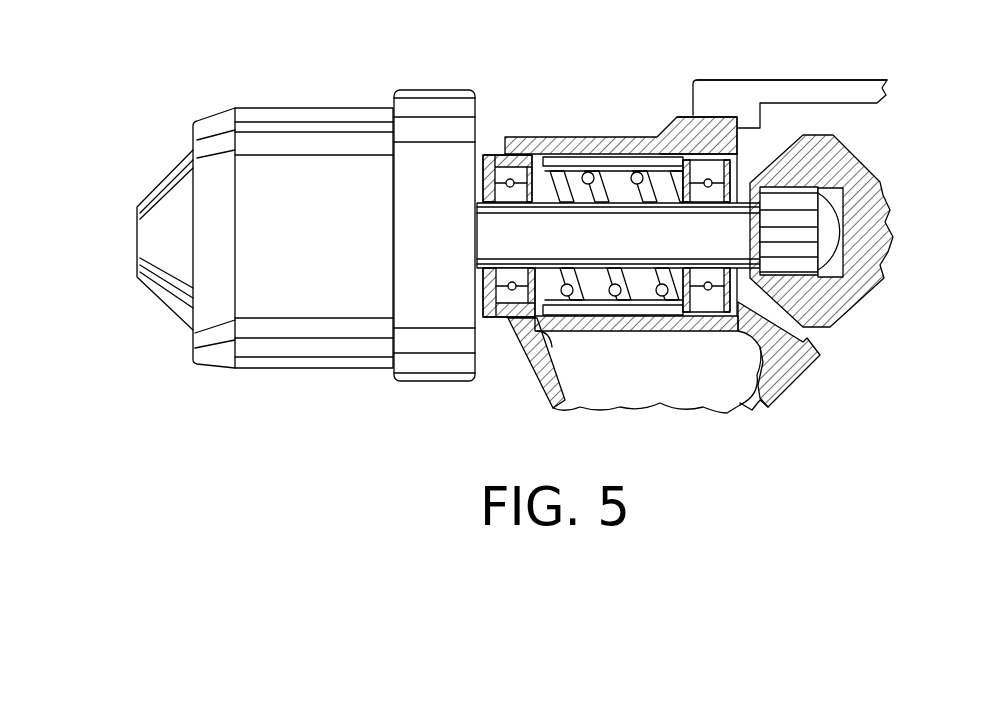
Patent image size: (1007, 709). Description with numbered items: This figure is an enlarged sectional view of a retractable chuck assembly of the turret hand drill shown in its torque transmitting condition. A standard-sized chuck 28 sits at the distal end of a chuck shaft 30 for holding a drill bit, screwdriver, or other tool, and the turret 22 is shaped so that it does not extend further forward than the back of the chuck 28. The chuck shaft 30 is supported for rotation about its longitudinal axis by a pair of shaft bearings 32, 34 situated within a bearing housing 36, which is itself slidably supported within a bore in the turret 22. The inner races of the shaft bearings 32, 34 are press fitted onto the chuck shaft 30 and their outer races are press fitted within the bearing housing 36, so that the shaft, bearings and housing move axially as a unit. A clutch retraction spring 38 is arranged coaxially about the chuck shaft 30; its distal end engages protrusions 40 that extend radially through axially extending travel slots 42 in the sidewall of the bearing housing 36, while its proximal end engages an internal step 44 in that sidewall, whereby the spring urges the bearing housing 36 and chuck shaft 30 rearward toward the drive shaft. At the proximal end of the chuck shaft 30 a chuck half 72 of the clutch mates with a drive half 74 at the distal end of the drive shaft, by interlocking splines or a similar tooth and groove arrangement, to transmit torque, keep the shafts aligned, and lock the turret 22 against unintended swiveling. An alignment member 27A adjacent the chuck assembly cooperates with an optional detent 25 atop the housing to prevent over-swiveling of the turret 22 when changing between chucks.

The turret 22 is at (547, 408).
The detent 25 is at (708, 80).
The alignment member 27A is at (687, 112).
The chuck 28 is at (343, 249).
The chuck shaft 30 is at (740, 248).
The shaft bearing 32 is at (495, 156).
The shaft bearing 34 is at (708, 314).
The bearing housing 36 is at (493, 318).
The clutch retraction spring 38 is at (580, 135).
The protrusions 40 is at (543, 257).
The travel slots 42 is at (623, 103).
The internal step 44 is at (667, 195).
The chuck half 72 is at (773, 133).
The drive half 74 is at (807, 133).